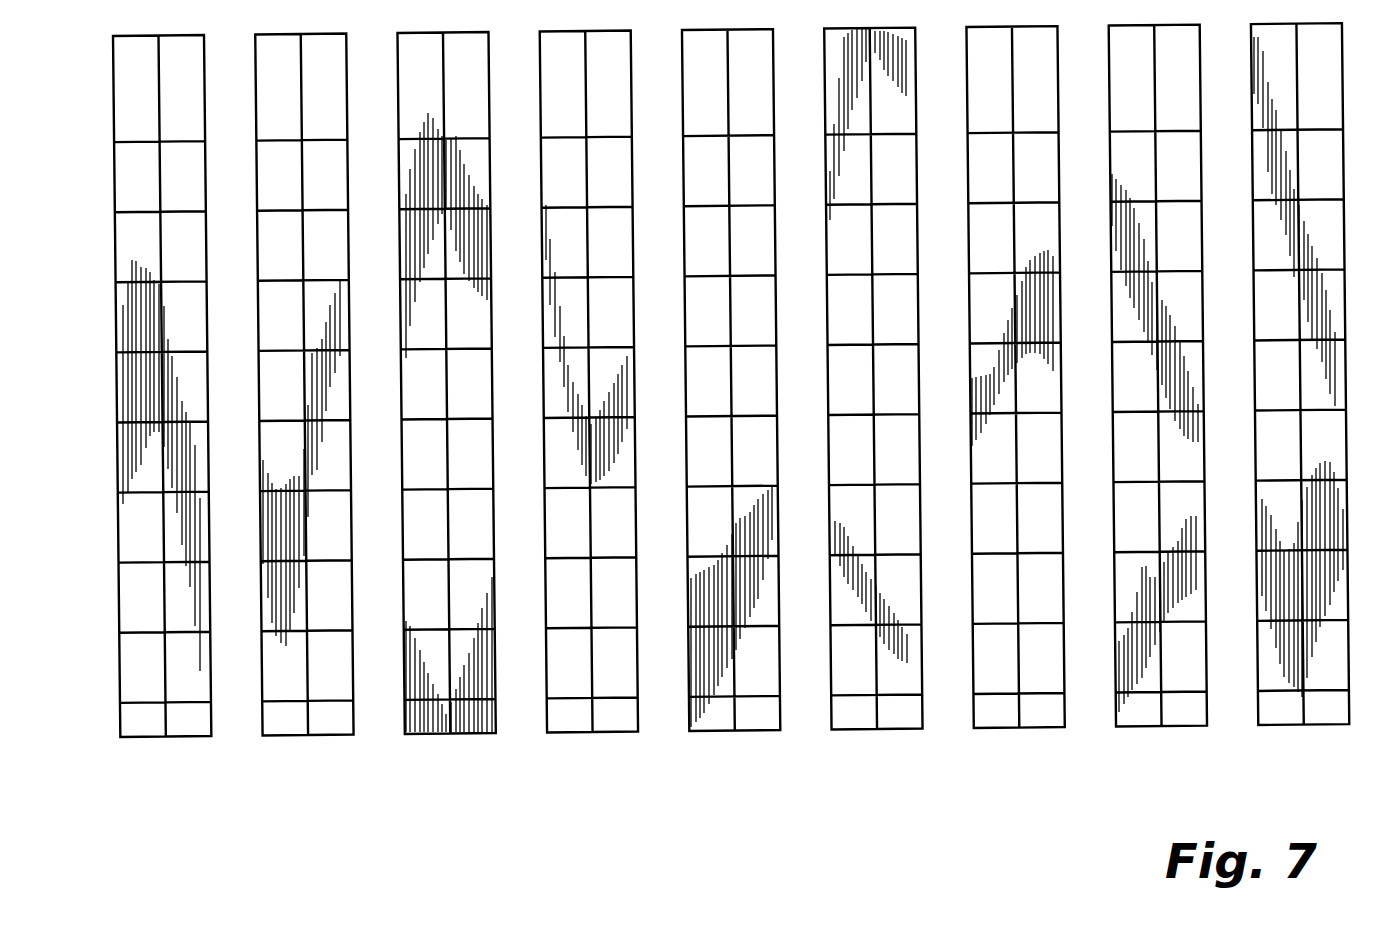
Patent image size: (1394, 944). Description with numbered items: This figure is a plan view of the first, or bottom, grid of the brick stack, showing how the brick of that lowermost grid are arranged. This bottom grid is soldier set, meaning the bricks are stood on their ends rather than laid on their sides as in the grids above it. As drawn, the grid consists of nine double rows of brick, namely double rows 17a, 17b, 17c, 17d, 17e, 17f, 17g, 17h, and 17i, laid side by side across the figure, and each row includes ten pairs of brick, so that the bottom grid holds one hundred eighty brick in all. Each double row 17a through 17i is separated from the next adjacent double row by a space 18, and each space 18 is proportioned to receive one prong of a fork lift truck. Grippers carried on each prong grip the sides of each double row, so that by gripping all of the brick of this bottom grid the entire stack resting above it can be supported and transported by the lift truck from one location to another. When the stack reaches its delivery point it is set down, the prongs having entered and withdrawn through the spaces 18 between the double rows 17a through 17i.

The double row 17a is at (180, 737).
The double row 17b is at (297, 728).
The double row 17c is at (457, 726).
The double row 17d is at (617, 722).
The double row 17e is at (718, 728).
The double row 17f is at (860, 722).
The double row 17g is at (1028, 715).
The double row 17h is at (1142, 715).
The double row 17i is at (1320, 710).
The space 18 is at (1225, 752).